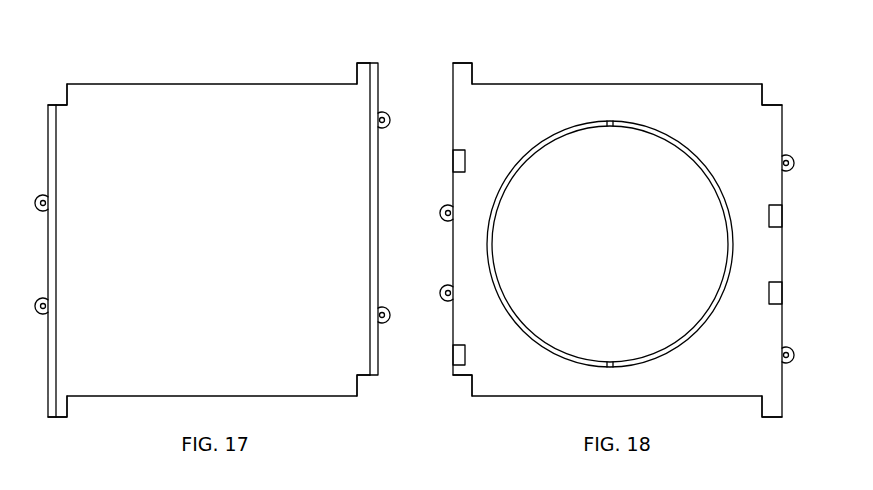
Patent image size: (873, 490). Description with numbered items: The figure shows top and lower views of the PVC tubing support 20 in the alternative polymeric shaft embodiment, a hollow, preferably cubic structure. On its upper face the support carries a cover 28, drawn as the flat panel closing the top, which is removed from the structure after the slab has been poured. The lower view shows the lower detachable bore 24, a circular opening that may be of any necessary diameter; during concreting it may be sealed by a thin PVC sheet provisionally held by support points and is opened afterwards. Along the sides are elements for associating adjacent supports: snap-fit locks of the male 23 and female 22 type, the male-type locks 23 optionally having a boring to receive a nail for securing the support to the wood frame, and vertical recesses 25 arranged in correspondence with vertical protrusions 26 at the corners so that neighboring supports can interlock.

In FIG. 17, the mounting plate 20 is at (241, 60).
In FIG. 18, the mounting plate 20 is at (663, 58).
In FIG. 18, the female-type snap-fit lock 22 is at (452, 157).
In FIG. 17, the male-type snap-fit lock 23 is at (43, 194).
In FIG. 18, the male-type snap-fit lock 23 is at (440, 213).
In FIG. 18, the lower detachable bore 24 is at (672, 202).
In FIG. 17, the vertical recess 25 is at (60, 96).
In FIG. 18, the vertical recess 25 is at (465, 388).
In FIG. 17, the vertical protrusion 26 is at (368, 62).
In FIG. 18, the vertical protrusion 26 is at (462, 62).
In FIG. 17, the cover 28 is at (192, 108).
In FIG. 18, the cover 28 is at (614, 119).